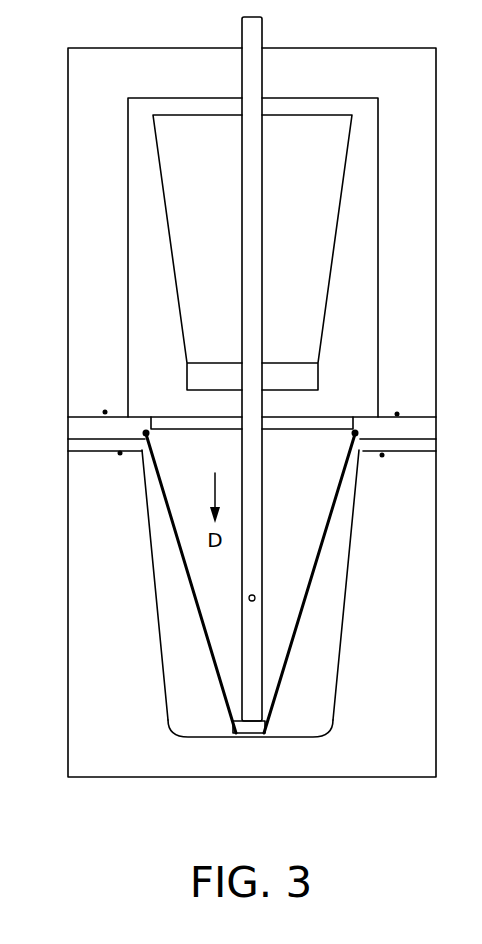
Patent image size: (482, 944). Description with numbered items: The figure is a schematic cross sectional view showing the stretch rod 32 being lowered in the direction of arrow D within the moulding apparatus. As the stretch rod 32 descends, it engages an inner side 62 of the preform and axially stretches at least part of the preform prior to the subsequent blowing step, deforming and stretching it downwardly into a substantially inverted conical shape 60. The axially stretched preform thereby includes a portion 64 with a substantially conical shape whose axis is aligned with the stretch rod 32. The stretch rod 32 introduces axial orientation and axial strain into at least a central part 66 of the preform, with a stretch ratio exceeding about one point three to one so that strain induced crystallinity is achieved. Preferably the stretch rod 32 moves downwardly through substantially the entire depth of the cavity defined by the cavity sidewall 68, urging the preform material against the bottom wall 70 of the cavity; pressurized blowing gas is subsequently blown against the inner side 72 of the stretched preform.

The stretch rod 32 is at (256, 36).
The substantially inverted conical shape 60 is at (302, 588).
The inner side 62 is at (325, 533).
The portion with substantially conical shape 64 is at (211, 650).
The central part 66 is at (287, 676).
The cavity sidewall 68 is at (350, 568).
The bottom wall 70 is at (192, 738).
The inner side 72 is at (160, 628).